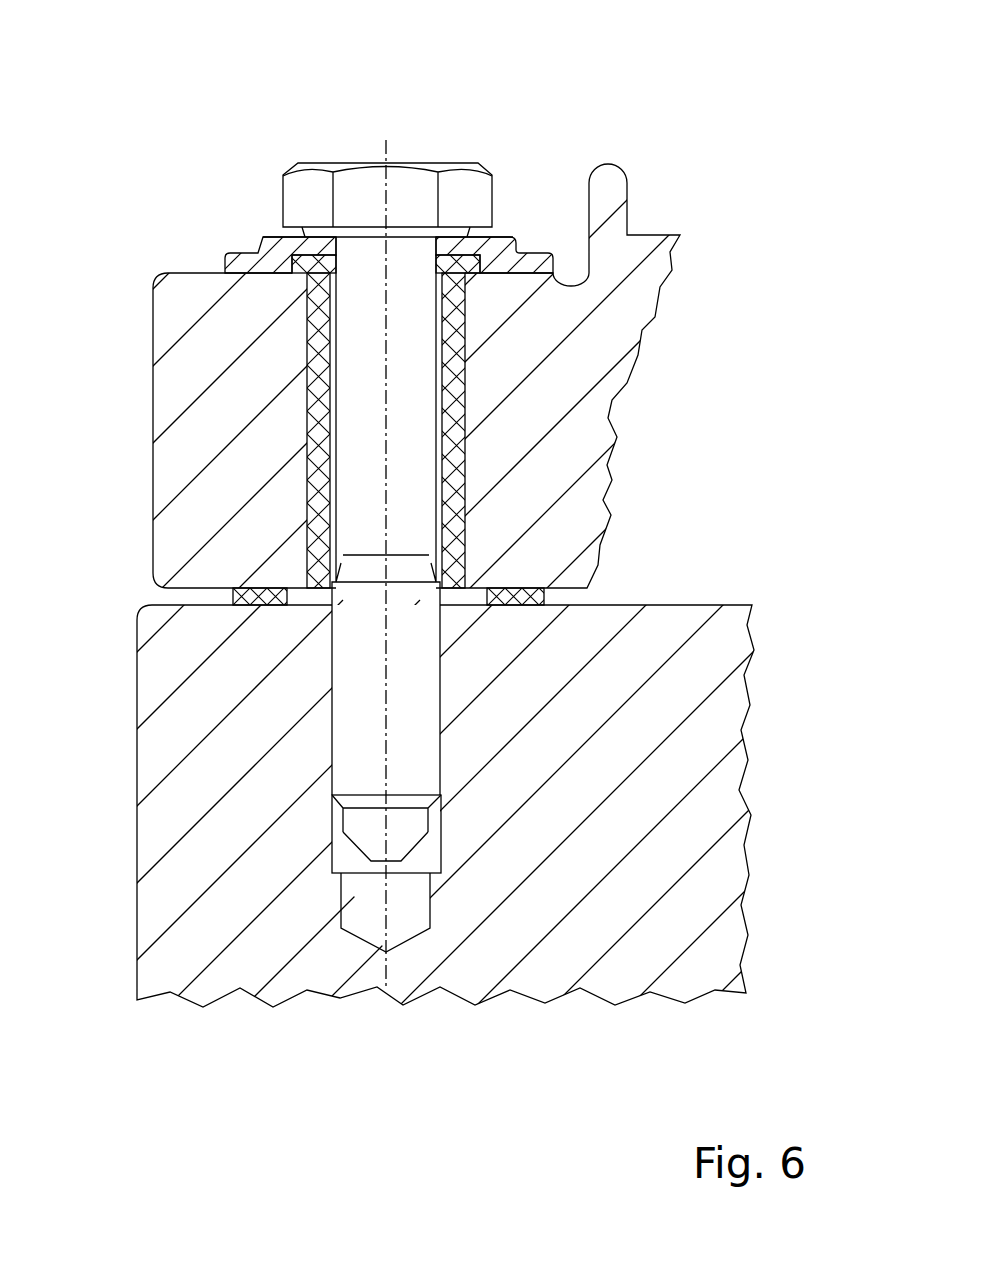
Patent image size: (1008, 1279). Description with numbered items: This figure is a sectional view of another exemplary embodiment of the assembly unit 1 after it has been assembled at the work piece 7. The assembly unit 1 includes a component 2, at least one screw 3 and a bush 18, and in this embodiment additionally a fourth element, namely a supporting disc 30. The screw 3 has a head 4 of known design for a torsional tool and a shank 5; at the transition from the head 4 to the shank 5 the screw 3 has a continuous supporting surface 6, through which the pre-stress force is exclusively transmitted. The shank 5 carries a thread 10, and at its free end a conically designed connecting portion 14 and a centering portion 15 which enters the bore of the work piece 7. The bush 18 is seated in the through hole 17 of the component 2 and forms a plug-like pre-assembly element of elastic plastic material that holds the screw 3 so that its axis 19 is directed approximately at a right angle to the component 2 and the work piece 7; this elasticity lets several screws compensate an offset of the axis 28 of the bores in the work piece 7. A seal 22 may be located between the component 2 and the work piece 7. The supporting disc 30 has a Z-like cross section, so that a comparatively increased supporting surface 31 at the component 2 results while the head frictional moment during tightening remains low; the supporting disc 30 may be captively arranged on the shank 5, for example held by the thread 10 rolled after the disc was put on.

The assembly unit 1 is at (745, 108).
The component 2 is at (570, 392).
The screw 3 is at (466, 489).
The head 4 is at (413, 192).
The shank 5 is at (410, 452).
The supporting surface 6 is at (552, 301).
The work piece 7 is at (655, 722).
The thread 10 is at (428, 683).
The connecting portion 14 is at (360, 798).
The centering portion 15 is at (370, 845).
The through hole 17 is at (465, 497).
The bush 18 is at (452, 341).
The axis 19 is at (385, 268).
The seal 22 is at (233, 595).
The axis 28 is at (383, 918).
The supporting disc 30 is at (502, 257).
The supporting surface 31 is at (263, 273).